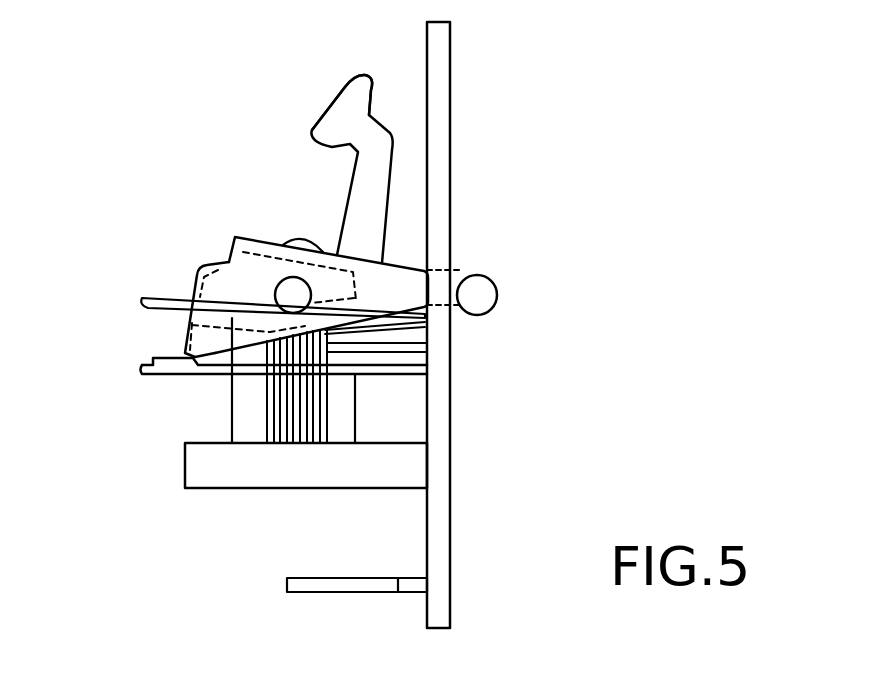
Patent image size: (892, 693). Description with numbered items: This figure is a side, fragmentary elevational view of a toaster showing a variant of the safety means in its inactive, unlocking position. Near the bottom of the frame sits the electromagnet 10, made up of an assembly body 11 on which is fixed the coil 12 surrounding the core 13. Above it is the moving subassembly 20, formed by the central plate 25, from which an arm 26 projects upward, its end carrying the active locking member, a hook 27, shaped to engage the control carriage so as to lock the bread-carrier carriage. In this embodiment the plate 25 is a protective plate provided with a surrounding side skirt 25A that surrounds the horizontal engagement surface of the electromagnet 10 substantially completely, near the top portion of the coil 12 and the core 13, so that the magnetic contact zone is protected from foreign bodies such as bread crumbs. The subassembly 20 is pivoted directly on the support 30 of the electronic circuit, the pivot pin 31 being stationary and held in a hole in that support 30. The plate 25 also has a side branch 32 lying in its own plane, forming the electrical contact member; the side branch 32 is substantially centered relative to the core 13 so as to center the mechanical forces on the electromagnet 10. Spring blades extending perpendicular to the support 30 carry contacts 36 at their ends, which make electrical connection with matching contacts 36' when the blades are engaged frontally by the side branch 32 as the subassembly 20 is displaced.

The electromagnet 10 is at (219, 509).
The assembly body 11 is at (252, 460).
The coil 12 is at (347, 413).
The core 13 is at (292, 425).
The moving subassembly 20 is at (171, 168).
The central plate 25 is at (257, 240).
The surrounding side skirt 25A is at (195, 318).
The arm 26 is at (368, 207).
The hook 27 is at (350, 100).
The support of the electronic circuit 30 is at (437, 508).
The pivot pin 31 is at (480, 292).
The side branch 32 is at (293, 293).
The contacts 36 is at (245, 297).
The matching contacts 36' is at (246, 381).